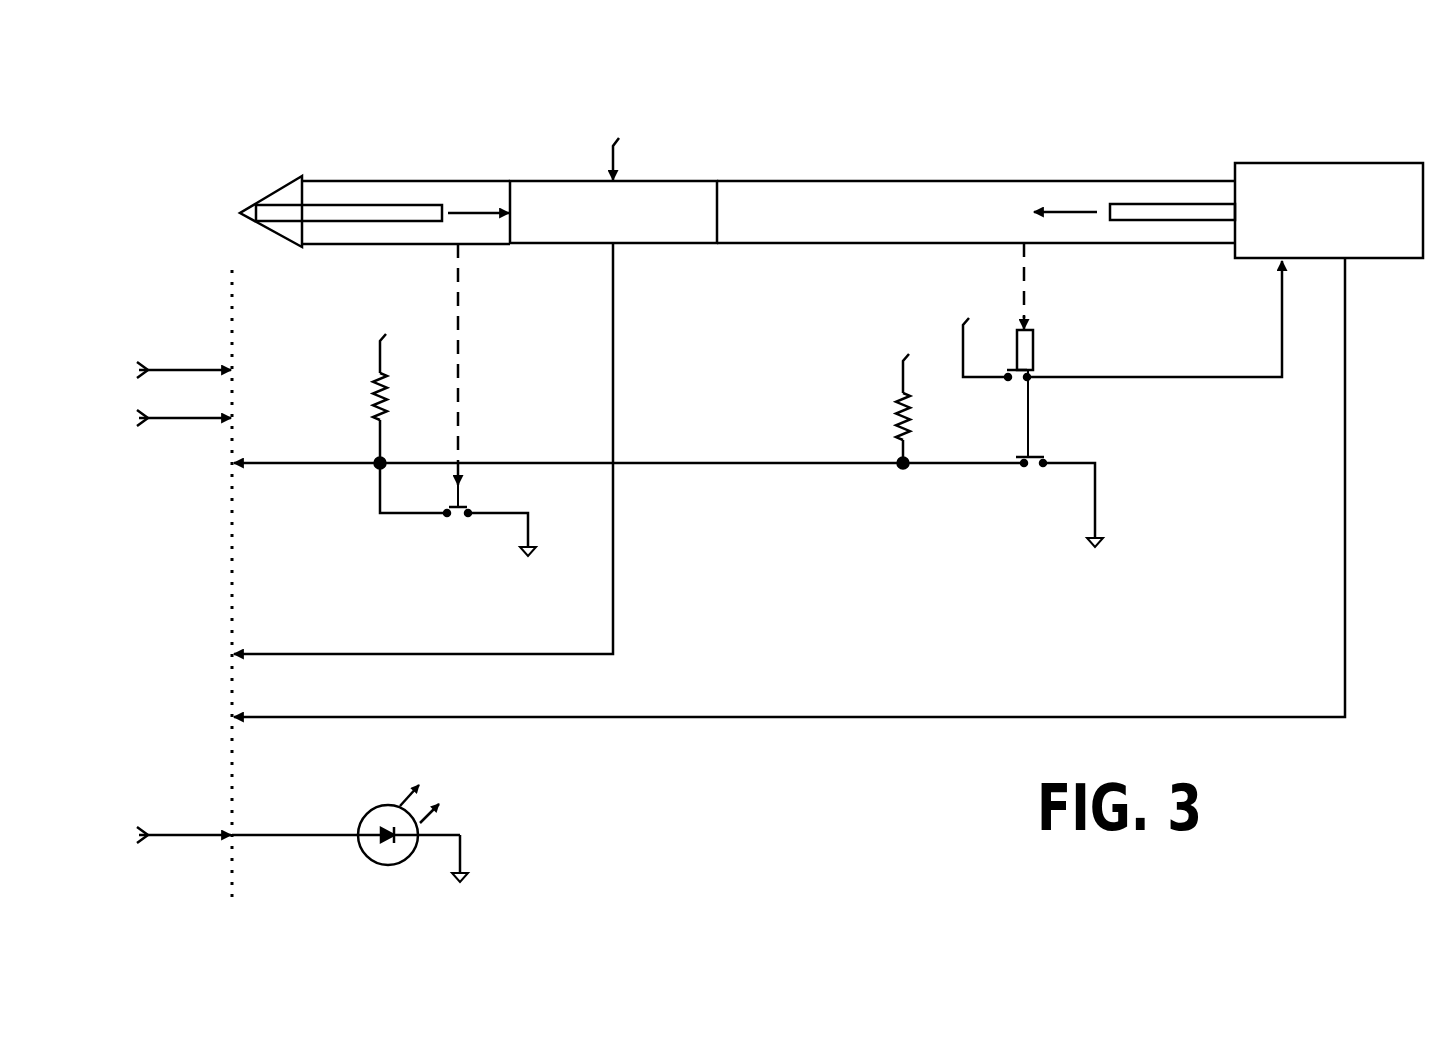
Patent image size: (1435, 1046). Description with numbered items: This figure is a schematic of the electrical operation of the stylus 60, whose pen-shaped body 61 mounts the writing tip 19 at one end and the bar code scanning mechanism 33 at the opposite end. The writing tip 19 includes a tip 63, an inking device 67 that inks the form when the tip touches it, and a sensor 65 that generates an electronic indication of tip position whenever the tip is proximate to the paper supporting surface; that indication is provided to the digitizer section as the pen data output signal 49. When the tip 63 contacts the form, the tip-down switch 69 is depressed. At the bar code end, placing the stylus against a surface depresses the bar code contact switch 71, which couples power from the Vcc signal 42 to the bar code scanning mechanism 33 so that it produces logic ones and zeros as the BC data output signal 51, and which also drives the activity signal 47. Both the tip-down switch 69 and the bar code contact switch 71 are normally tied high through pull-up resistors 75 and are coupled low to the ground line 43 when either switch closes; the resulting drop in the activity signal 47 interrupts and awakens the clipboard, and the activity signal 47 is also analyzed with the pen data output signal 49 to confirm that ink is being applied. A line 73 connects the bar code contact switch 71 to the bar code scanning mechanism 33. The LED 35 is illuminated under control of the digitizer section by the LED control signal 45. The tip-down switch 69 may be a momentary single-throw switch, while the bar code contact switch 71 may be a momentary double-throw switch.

The writing tip 19 is at (383, 253).
The tip 63 is at (240, 213).
The inking device 67 is at (282, 213).
The sensor 65 is at (708, 180).
The stylus 60 is at (1082, 178).
The pen-shaped body 61 is at (1107, 244).
The bar code scanning mechanism 33 is at (1233, 251).
The Vcc signal 42 is at (185, 370).
The ground line 43 is at (177, 418).
The activity signal 47 is at (300, 463).
The pull-up resistors 75 is at (388, 392).
The tip-down switch 69 is at (472, 487).
The bar code contact switch 71 is at (1011, 397).
The scanner enable line 73 is at (1210, 387).
The pen data output signal 49 is at (330, 653).
The BC data output signal 51 is at (437, 718).
The LED 35 is at (367, 810).
The LED control signal 45 is at (150, 838).